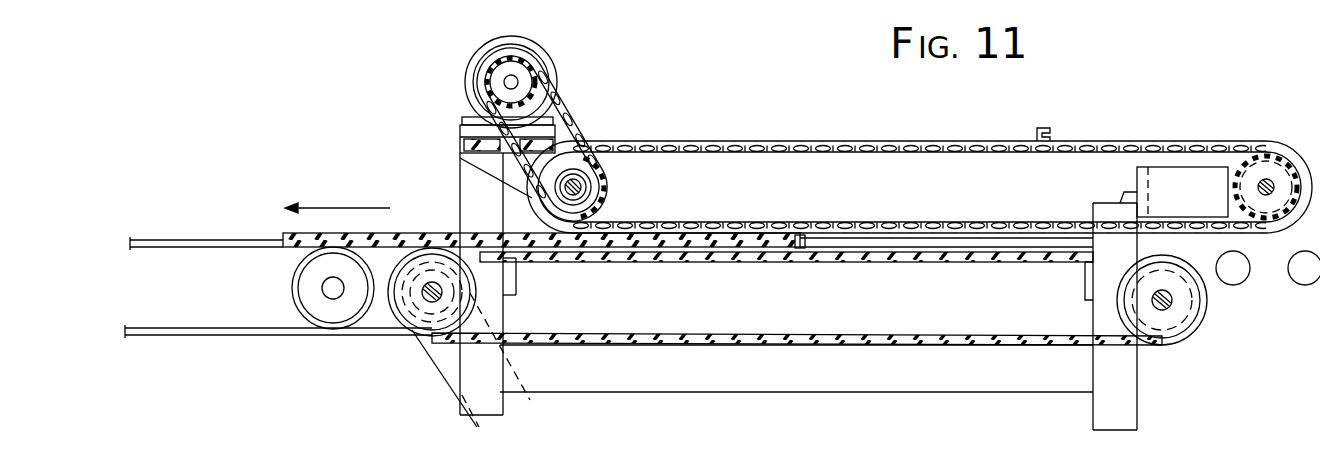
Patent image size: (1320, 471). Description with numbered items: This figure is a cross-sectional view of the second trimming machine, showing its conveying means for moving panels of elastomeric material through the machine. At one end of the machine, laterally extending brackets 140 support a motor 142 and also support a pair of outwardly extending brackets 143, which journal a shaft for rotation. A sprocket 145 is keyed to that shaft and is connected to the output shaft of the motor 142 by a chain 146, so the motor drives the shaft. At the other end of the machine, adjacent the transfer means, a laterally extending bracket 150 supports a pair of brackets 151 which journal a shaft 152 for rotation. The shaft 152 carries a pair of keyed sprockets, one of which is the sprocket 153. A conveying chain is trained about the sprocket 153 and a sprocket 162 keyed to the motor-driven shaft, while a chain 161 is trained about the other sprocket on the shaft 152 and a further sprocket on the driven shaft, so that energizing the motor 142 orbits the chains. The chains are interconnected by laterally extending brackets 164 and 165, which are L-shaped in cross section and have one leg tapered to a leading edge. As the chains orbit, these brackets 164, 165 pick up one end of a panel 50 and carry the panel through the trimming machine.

The panel 50 is at (396, 240).
The laterally extending brackets 140 is at (470, 142).
The motor 142 is at (532, 44).
The outwardly extending brackets 143 is at (505, 180).
The sprocket 145 is at (602, 200).
The chain 146 is at (568, 118).
The laterally extending bracket 150 is at (1110, 202).
The brackets 151 is at (1183, 195).
The shaft 152 is at (1268, 185).
The sprocket 153 is at (1228, 194).
The chain 161 is at (900, 145).
The sprocket 162 is at (612, 175).
The laterally extending bracket 164 is at (1042, 128).
The laterally extending bracket 165 is at (808, 232).